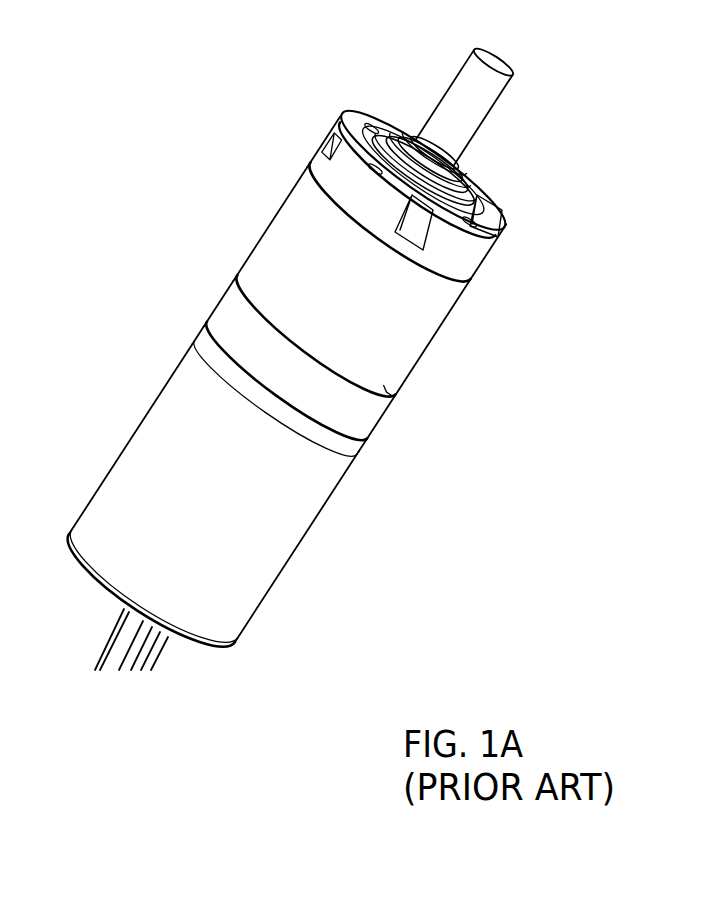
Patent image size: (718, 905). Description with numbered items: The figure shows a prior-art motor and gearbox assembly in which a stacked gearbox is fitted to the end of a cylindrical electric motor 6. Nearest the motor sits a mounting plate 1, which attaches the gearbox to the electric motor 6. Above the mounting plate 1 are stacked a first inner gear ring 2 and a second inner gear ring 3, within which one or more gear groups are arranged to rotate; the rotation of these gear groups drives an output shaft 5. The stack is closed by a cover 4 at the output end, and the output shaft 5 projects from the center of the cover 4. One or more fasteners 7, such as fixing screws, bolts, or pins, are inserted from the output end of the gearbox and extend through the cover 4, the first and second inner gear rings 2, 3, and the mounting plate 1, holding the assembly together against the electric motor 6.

The mounting plate 1 is at (369, 407).
The first inner gear ring 2 is at (403, 356).
The second inner gear ring 3 is at (443, 275).
The cover 4 is at (492, 197).
The output shaft 5 is at (542, 105).
The electric motor 6 is at (255, 507).
The fastener 7 is at (498, 173).